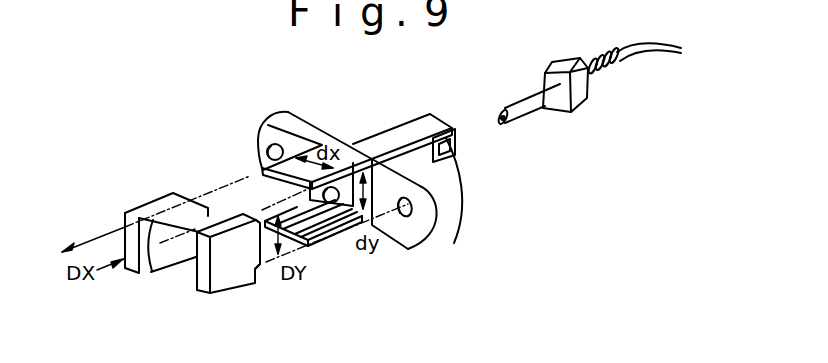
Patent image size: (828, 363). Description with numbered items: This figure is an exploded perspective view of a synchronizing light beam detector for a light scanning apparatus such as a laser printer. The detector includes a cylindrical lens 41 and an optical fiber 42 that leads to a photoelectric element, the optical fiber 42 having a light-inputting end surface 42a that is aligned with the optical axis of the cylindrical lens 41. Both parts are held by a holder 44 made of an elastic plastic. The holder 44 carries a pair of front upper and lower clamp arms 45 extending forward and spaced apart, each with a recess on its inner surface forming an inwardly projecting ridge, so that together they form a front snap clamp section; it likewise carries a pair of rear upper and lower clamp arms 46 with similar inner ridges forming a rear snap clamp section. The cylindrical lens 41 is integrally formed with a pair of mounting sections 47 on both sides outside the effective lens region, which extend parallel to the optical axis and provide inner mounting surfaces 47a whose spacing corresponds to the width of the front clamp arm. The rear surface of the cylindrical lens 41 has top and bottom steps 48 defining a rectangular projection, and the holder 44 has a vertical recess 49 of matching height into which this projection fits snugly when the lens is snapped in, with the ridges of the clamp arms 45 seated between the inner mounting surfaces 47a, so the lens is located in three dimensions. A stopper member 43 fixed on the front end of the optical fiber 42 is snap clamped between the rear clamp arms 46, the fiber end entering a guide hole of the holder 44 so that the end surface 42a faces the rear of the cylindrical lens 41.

The cylindrical lens 41 is at (178, 262).
The optical fiber 42 is at (670, 57).
The light-inputting end surface 42a is at (503, 125).
The stopper member 43 is at (568, 113).
The holder 44 is at (468, 234).
The front upper and lower clamp arms 45 is at (266, 133).
The rear upper and lower clamp arms 46 is at (433, 122).
The mounting sections 47 is at (158, 204).
The inner mounting surfaces 47a is at (140, 277).
The steps 48 is at (258, 222).
The vertical recess 49 is at (353, 243).